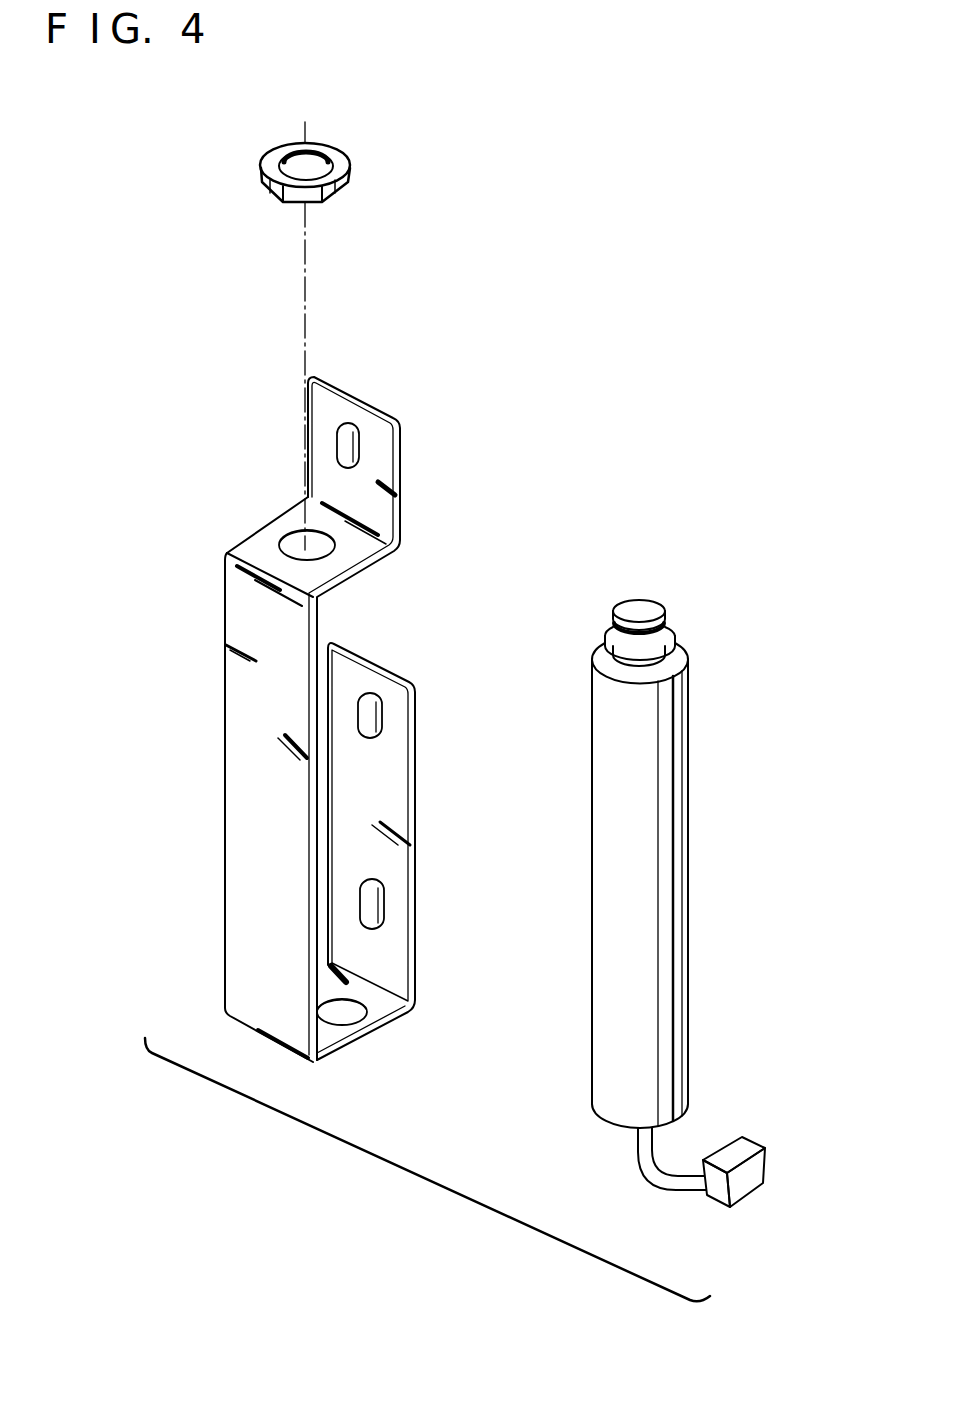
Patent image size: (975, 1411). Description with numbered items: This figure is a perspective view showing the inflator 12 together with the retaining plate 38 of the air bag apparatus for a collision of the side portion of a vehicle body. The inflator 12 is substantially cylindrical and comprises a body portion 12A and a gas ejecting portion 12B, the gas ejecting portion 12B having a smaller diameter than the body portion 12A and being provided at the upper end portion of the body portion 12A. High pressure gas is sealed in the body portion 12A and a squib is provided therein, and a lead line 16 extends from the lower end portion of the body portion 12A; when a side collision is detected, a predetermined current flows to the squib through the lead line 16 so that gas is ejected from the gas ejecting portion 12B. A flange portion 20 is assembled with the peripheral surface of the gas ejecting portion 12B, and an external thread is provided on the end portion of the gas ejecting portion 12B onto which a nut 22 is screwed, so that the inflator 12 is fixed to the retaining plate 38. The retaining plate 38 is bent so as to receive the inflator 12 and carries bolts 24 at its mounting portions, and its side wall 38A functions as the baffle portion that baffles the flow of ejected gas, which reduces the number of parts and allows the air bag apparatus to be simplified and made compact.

The nut 22 is at (343, 163).
The retaining plate 38 is at (287, 682).
The side wall 38A is at (233, 592).
The bolts 24 is at (348, 467).
The inflator 12 is at (655, 907).
The body portion 12A is at (673, 878).
The gas ejecting portion 12B is at (637, 657).
The flange portion 20 is at (667, 623).
The lead line 16 is at (660, 1175).